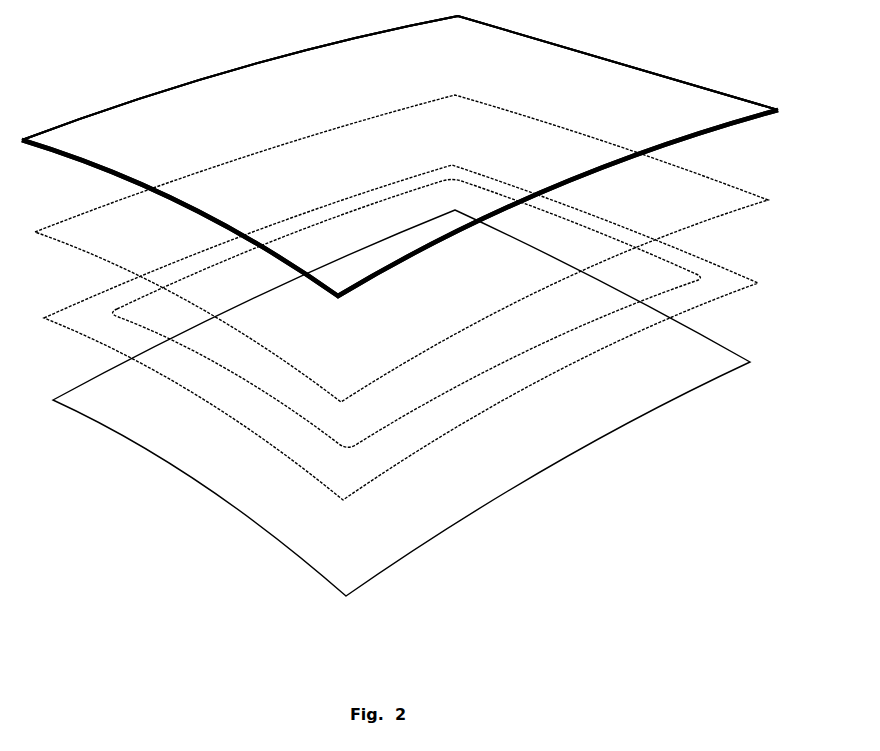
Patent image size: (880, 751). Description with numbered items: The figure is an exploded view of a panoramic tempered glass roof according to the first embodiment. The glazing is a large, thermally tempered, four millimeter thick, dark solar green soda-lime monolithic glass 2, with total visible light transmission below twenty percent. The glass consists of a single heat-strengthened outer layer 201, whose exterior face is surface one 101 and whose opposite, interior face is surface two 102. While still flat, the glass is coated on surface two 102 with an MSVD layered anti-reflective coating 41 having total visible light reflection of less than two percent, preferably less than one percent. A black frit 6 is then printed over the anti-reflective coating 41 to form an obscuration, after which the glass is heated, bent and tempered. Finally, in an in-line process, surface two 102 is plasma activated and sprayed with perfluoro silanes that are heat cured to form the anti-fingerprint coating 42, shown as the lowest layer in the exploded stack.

The glass 2 is at (683, 78).
The surface one 101 is at (250, 66).
The surface two 102 is at (620, 163).
The outer layer 201 is at (147, 97).
The anti-reflective coating 41 is at (506, 308).
The obscuration/black frit 6 is at (520, 391).
The anti-fingerprint coating 42 is at (207, 487).